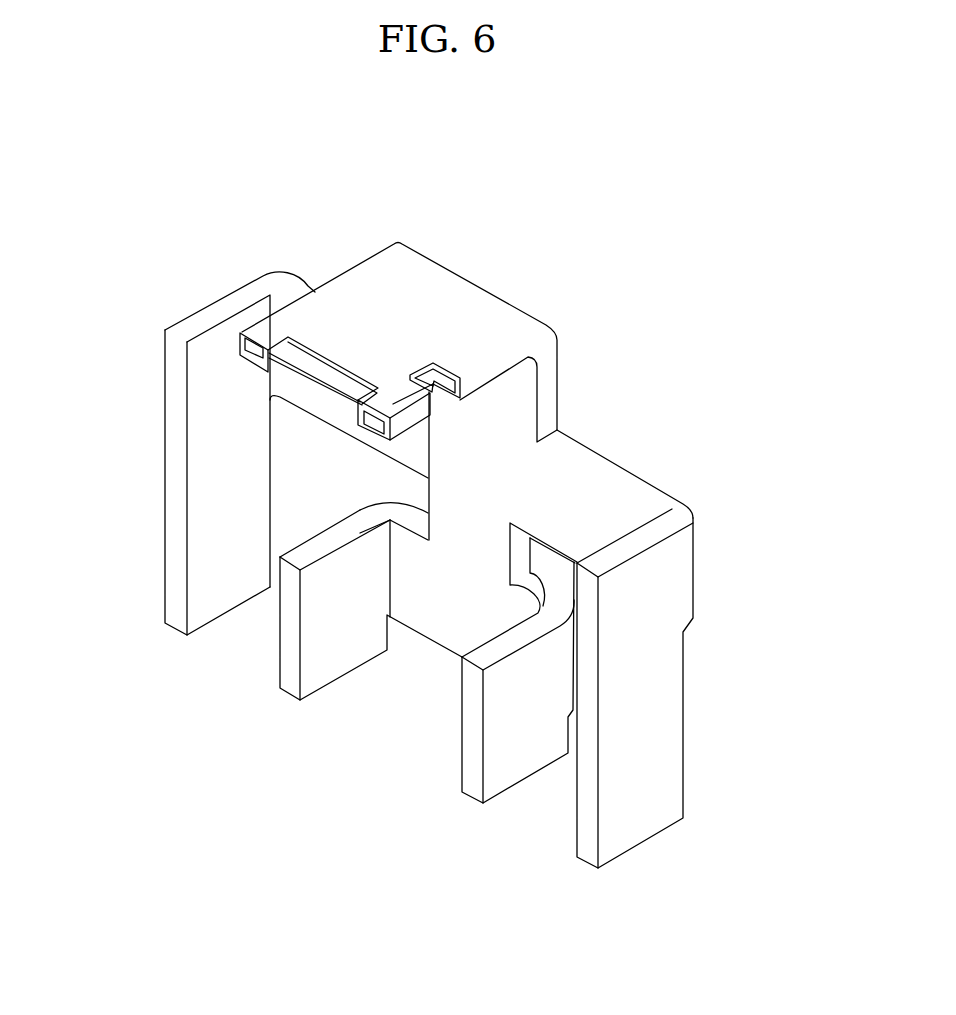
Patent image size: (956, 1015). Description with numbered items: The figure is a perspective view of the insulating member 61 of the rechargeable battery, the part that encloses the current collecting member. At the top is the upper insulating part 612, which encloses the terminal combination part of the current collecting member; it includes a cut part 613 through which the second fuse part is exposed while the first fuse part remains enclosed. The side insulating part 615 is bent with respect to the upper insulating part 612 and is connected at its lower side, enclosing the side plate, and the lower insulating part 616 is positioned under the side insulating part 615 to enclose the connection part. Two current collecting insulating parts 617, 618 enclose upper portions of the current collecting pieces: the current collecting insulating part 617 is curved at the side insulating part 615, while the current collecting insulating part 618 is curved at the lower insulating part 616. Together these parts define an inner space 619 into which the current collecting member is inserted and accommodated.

The insulating member 61 is at (454, 269).
The upper insulating part 612 is at (377, 282).
The cut part 613 is at (448, 371).
The side insulating part 615 is at (477, 438).
The lower insulating part 616 is at (467, 533).
The current collecting insulating part 617 is at (662, 692).
The current collecting insulating part 618 is at (330, 652).
The inner space 619 is at (258, 353).